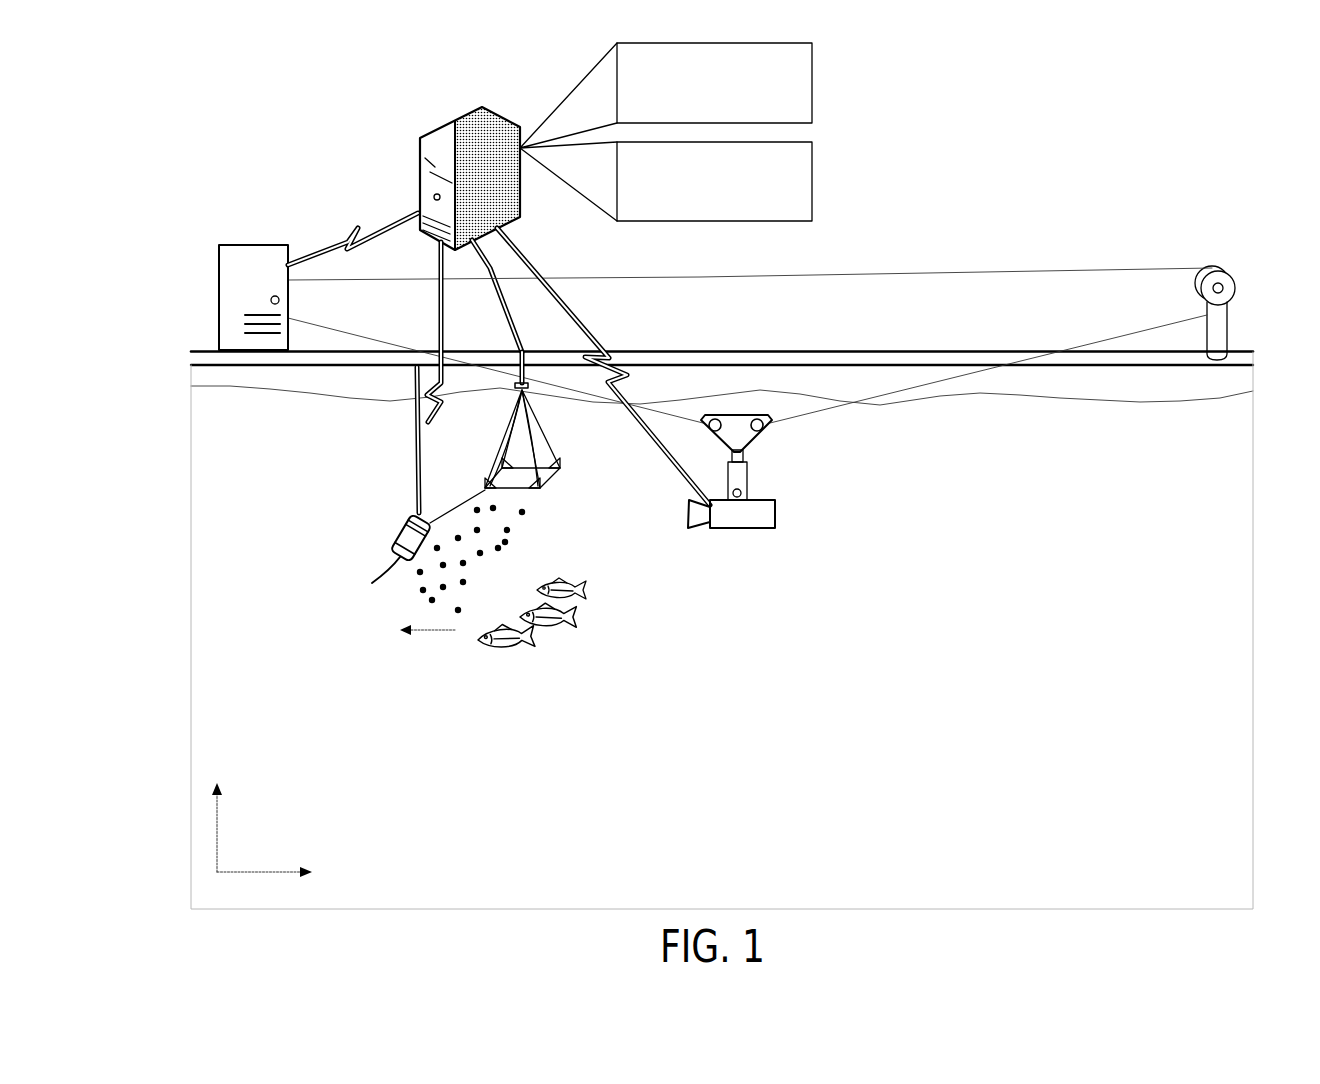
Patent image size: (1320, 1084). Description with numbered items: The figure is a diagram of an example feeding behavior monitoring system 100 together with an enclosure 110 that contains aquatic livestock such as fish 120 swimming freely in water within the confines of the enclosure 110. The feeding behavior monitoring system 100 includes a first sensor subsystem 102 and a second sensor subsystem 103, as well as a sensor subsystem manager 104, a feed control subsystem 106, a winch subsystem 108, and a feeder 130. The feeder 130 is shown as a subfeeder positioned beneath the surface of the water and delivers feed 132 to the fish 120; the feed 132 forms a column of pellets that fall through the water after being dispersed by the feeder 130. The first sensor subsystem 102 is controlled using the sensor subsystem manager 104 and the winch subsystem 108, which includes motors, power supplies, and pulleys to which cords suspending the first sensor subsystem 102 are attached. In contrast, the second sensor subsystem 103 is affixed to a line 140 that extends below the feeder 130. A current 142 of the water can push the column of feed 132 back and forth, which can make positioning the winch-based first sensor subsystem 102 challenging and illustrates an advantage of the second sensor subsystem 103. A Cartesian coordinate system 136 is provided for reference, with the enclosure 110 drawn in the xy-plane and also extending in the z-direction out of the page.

The feeding behavior monitoring system 100 is at (1200, 120).
The first sensor subsystem 102 is at (775, 515).
The second sensor subsystem 103 is at (400, 527).
The sensor subsystem manager 104 is at (812, 83).
The feed control subsystem 106 is at (812, 164).
The winch subsystem 108 is at (267, 244).
The enclosure 110 is at (191, 692).
The fish 120 is at (565, 652).
The feeder 130 is at (542, 410).
The feed 132 is at (523, 528).
The Cartesian coordinate system 136 is at (245, 850).
The line 140 is at (380, 575).
The current 142 is at (423, 663).